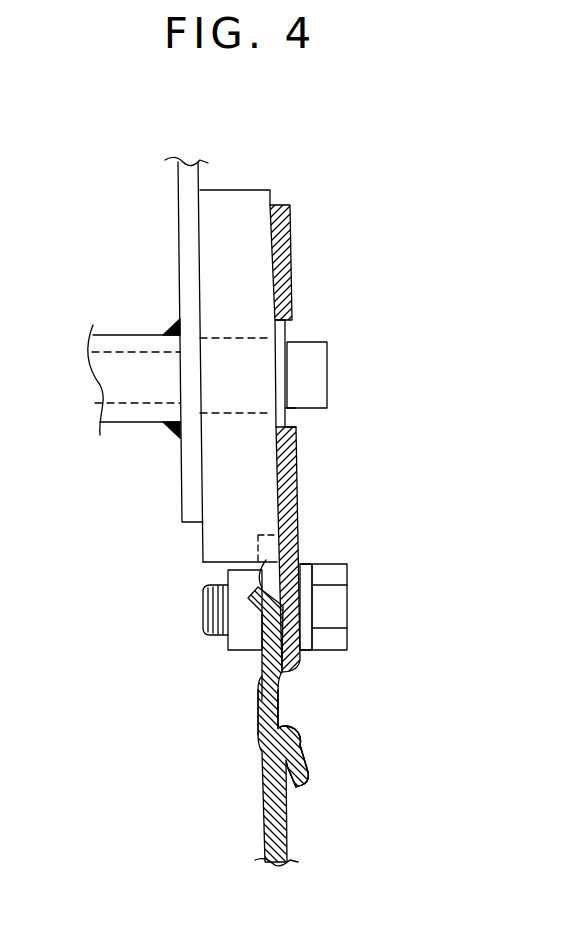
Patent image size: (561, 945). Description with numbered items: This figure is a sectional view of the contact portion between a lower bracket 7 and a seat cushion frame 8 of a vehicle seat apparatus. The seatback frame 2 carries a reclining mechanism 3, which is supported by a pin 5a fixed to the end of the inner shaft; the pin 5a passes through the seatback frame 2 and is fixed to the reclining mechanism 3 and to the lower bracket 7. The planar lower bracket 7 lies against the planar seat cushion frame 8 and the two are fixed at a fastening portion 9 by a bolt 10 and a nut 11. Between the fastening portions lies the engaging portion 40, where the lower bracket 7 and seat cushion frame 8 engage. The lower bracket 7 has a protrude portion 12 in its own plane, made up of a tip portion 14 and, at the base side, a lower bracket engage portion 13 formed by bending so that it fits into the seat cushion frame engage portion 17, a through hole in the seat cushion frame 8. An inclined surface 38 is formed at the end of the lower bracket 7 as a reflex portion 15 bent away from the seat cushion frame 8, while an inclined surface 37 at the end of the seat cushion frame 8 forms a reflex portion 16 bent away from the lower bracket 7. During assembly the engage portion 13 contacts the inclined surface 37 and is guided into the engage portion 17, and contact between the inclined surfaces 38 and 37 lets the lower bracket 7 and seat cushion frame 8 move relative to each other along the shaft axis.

The seatback frame 2 is at (180, 217).
The reclining mechanism 3 is at (235, 190).
The pin 5a is at (327, 372).
The lower bracket 7 is at (296, 458).
The seat cushion frame 8 is at (265, 830).
The fastening portion 9 is at (306, 607).
The bolt 10 is at (347, 622).
The nut 11 is at (228, 648).
The protrude portion 12 is at (382, 683).
The lower bracket engage portion 13 is at (284, 700).
The tip portion 14 is at (300, 742).
The reflex portion 15 is at (303, 777).
The reflex portion 16 is at (252, 594).
The seat cushion frame engage portion 17 is at (258, 705).
The inclined surface 37 is at (262, 560).
The inclined surface 38 is at (288, 788).
The engaging portion 40 is at (256, 722).